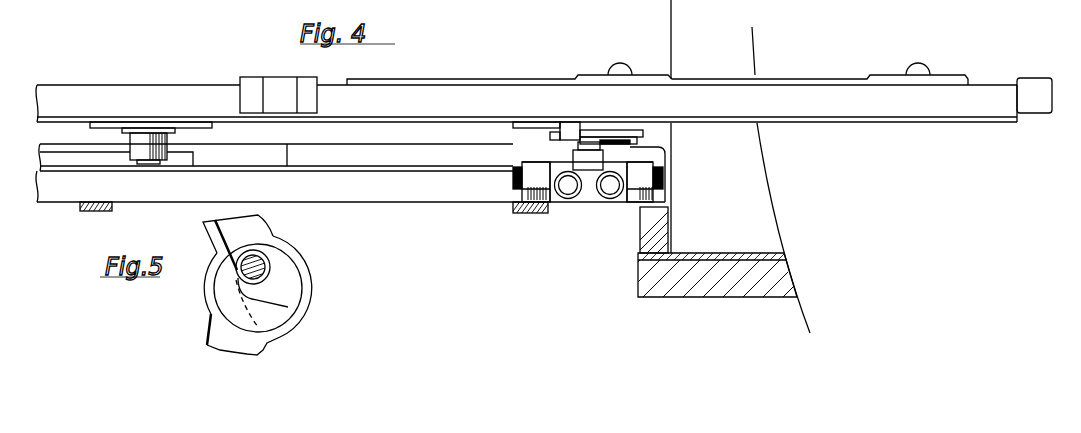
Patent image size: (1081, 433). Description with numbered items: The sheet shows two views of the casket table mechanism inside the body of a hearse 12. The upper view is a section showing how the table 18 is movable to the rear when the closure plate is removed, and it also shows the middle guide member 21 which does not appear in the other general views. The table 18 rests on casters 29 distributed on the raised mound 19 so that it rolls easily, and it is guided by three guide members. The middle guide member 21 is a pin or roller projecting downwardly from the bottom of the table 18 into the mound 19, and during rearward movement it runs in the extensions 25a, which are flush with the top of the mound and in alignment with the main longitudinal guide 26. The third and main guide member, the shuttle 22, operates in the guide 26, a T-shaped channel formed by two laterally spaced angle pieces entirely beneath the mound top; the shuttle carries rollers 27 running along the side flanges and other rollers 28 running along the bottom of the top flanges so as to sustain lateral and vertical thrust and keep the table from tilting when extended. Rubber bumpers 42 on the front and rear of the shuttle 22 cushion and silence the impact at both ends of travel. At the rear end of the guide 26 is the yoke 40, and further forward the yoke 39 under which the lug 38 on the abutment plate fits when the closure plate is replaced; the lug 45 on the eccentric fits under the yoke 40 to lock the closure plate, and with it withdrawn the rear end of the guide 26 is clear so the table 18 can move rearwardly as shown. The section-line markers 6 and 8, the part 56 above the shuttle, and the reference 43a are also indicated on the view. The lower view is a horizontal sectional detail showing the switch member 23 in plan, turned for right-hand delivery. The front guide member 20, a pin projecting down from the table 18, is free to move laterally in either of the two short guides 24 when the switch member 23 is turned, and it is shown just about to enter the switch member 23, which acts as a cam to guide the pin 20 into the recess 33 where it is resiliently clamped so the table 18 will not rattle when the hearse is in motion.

In FIG. 4, the body of a hearse 12 is at (767, 173).
In FIG. 4, the table 18 is at (510, 93).
In FIG. 4, the mound 19 is at (358, 144).
In FIG. 5, the front guide member 20 is at (263, 262).
In FIG. 4, the middle guide member 21 is at (148, 142).
In FIG. 4, the shuttle 22 is at (588, 140).
In FIG. 5, the switch member 23 is at (230, 298).
In FIG. 5, the short guides 24 is at (213, 233).
In FIG. 4, the extensions of the guides 25a is at (50, 162).
In FIG. 4, the main longitudinal guide 26 is at (457, 188).
In FIG. 4, the rollers 27 is at (525, 192).
In FIG. 4, the rollers 28 is at (572, 200).
In FIG. 4, the casters 29 is at (672, 143).
In FIG. 5, the recess 33 is at (275, 328).
In FIG. 4, the lug 38 is at (272, 56).
In FIG. 4, the yoke 39 is at (91, 212).
In FIG. 4, the yoke 40 is at (525, 222).
In FIG. 4, the rubber bumpers 42 is at (517, 165).
In FIG. 4, the bar 43a is at (531, 5).
In FIG. 4, the lug 45 is at (648, 126).
In FIG. 4, the block 56 is at (580, 102).
In FIG. 4, the section line 6- 6 is at (570, 23).
In FIG. 4, the section line 8- 8 is at (152, 77).